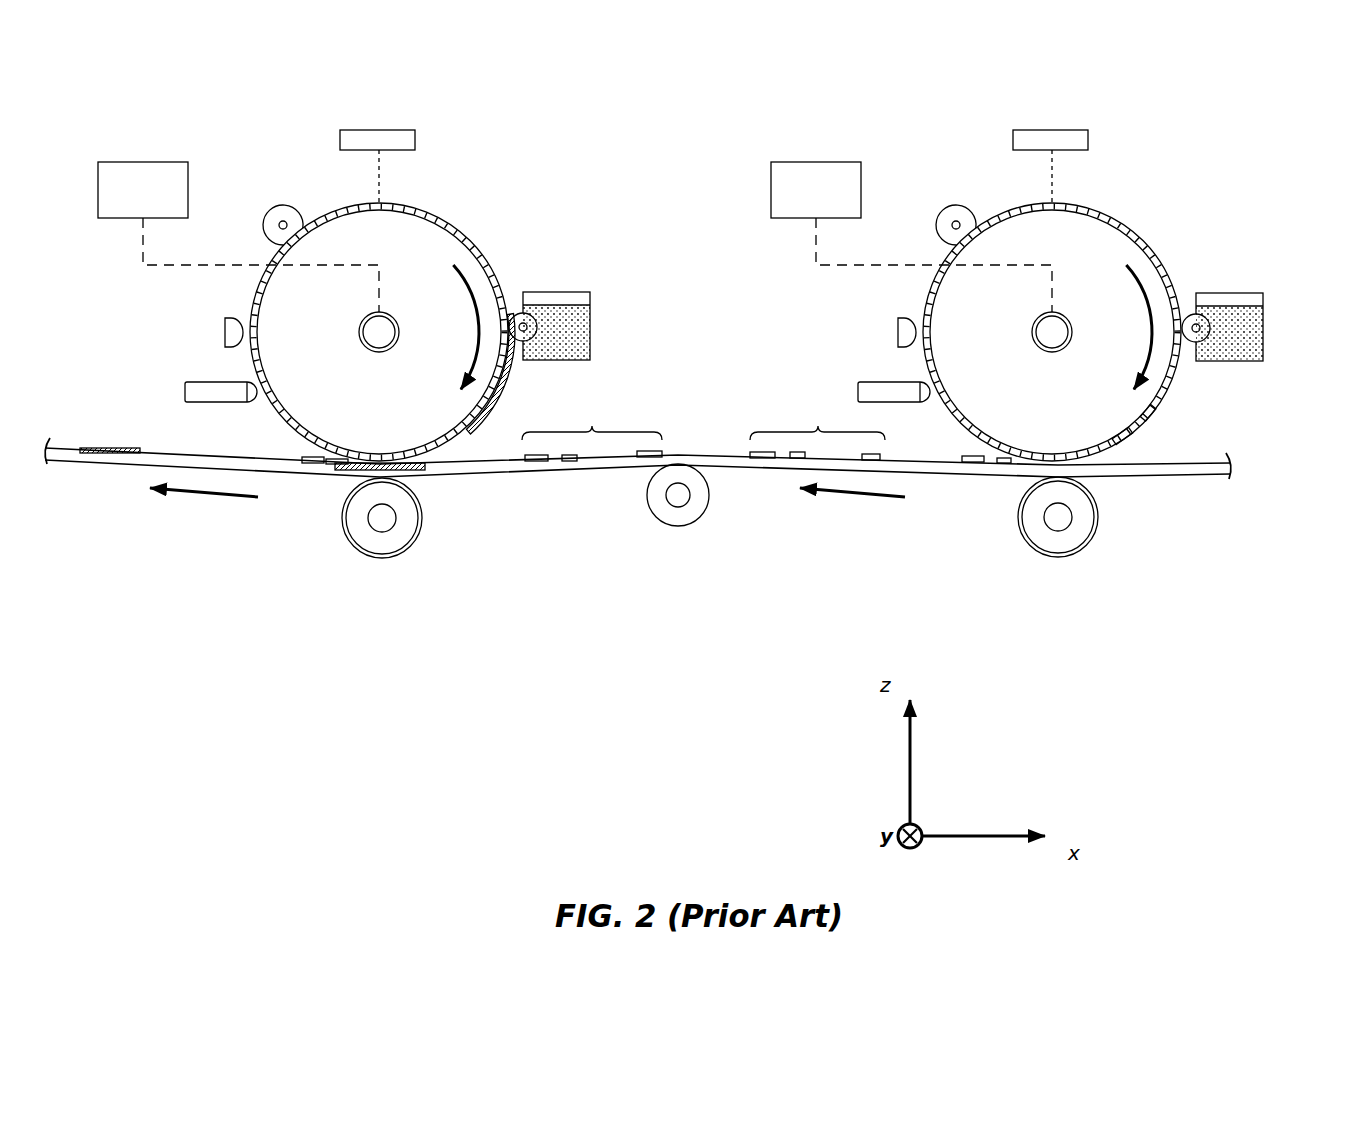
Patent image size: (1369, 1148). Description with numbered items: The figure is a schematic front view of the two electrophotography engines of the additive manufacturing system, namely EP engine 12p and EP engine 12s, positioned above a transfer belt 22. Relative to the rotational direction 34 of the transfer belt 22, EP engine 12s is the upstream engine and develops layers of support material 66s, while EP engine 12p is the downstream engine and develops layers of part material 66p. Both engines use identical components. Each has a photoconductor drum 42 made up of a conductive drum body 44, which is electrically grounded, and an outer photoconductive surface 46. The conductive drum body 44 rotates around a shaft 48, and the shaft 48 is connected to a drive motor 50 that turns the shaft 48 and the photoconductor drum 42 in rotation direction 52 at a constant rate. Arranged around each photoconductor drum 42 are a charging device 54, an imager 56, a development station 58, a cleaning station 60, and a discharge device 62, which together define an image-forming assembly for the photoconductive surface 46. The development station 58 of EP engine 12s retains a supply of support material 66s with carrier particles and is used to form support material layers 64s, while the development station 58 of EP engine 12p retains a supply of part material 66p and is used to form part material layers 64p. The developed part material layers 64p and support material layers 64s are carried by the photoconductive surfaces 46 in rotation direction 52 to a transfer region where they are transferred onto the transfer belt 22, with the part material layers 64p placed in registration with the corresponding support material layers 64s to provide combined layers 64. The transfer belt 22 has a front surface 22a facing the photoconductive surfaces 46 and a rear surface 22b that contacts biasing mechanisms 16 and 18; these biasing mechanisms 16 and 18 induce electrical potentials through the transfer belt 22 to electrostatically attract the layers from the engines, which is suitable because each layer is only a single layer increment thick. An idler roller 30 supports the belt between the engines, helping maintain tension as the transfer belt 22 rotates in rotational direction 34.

The EP engine 12p is at (478, 116).
The EP engine 12s is at (1152, 116).
The biasing mechanism 16 is at (1080, 527).
The biasing mechanism 18 is at (413, 527).
The transfer belt 22 is at (1198, 478).
The front surface 22a is at (707, 458).
The rear surface 22b is at (712, 470).
The idler roller 30 is at (681, 518).
The rotational direction 34 is at (197, 495).
The photoconductor drum 42 is at (492, 240).
The conductive drum body 44 is at (393, 414).
The photoconductive surface 46 is at (453, 213).
The shaft 48 is at (370, 334).
The drive motor 50 is at (112, 162).
The rotation direction 52 is at (476, 298).
The charging device 54 is at (290, 206).
The imager 56 is at (368, 130).
The development station 58 is at (598, 290).
The cleaning station 60 is at (200, 382).
The discharge device 62 is at (225, 320).
The combined layer 64 is at (145, 440).
The part material layer 64p is at (508, 390).
The support material layer 64s is at (1242, 418).
The part material 66p is at (580, 316).
The support material 66s is at (1252, 340).